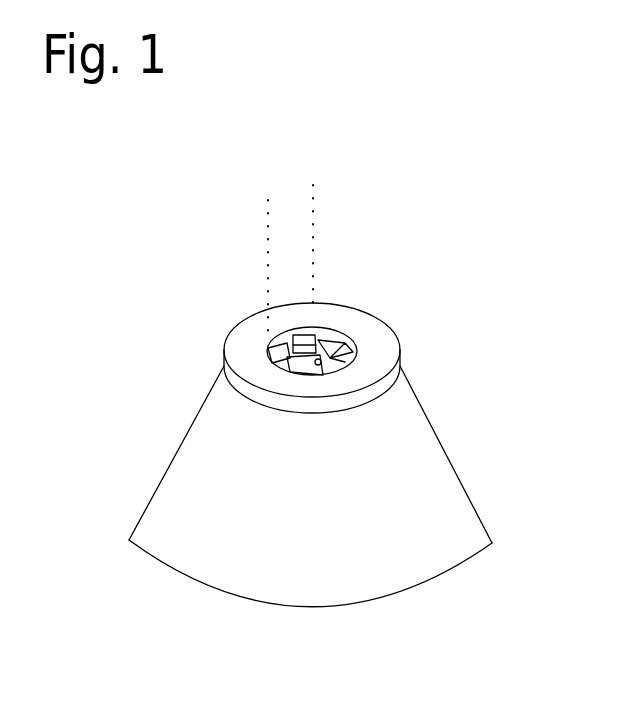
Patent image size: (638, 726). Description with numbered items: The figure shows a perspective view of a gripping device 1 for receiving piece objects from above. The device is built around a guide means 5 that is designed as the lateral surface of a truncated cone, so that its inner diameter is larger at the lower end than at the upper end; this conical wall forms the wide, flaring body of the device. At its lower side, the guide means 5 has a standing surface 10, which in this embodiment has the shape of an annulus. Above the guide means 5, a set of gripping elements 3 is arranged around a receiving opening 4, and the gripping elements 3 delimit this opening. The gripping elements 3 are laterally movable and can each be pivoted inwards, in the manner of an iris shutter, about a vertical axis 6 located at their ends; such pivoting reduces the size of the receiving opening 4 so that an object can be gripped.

The gripping device 1 is at (168, 286).
The gripping elements 3 is at (332, 343).
The receiving opening 4 is at (353, 353).
The guide means 5 is at (433, 488).
The vertical axis 6 is at (268, 192).
The standing surface 10 is at (147, 553).